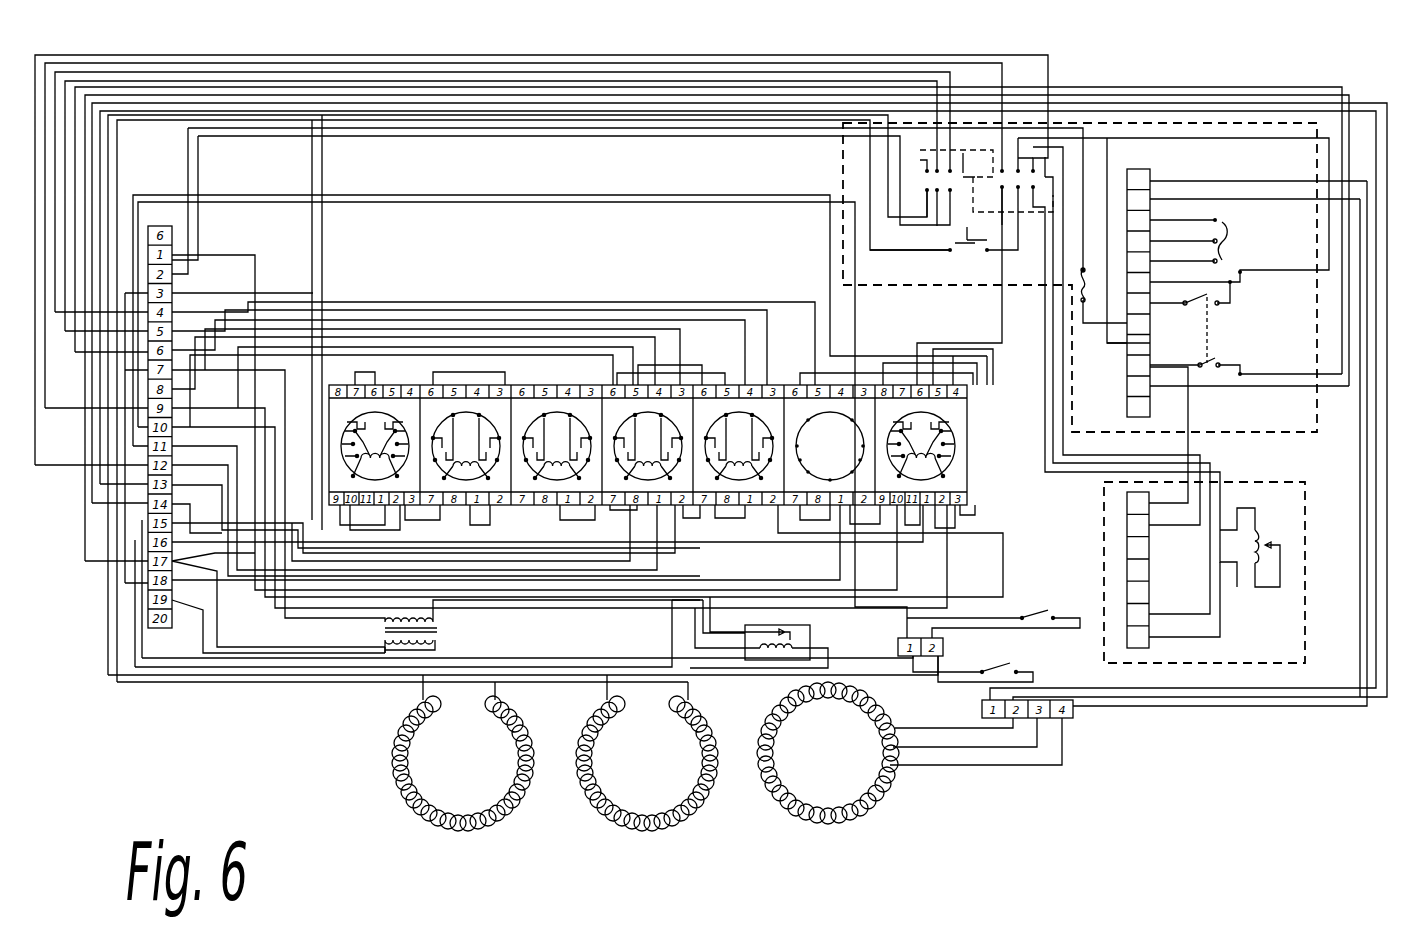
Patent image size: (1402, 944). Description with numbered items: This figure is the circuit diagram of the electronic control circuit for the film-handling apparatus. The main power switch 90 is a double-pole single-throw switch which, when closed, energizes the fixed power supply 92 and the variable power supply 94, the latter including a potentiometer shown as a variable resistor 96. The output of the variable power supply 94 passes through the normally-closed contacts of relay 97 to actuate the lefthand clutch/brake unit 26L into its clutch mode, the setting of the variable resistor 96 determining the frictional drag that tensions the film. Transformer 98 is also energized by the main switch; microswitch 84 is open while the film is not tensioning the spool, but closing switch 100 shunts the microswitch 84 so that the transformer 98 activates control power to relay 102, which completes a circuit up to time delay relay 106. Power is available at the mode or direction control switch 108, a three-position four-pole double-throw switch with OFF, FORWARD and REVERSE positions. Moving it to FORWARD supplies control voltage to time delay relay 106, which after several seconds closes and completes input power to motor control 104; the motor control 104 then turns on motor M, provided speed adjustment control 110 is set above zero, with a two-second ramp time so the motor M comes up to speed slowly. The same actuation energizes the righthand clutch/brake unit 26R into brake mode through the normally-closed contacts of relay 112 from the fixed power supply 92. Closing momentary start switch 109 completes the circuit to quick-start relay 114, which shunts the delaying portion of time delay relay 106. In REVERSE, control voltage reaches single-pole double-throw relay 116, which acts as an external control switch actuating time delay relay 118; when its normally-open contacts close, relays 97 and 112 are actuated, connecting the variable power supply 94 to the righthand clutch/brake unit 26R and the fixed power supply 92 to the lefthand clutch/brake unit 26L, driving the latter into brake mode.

The quick-start relay 114 is at (385, 430).
The relay 102 is at (468, 425).
The time delay relay 106 is at (557, 428).
The relay 97 is at (647, 433).
The relay 112 is at (730, 425).
The fixed power supply 92 is at (815, 425).
The time delay relay 118 is at (905, 428).
The mode or direction control switch 108 is at (943, 183).
The momentary start switch 109 is at (983, 227).
The speed adjustment control 110 is at (1225, 235).
The main power switch 90 is at (1208, 325).
The motor control 104 is at (1097, 432).
The variable power supply 94 is at (1103, 572).
The variable resistor 96 is at (1265, 540).
The switch 100 is at (1040, 612).
The microswitch 84 is at (1010, 673).
The transformer 98 is at (420, 648).
The single-pole double-throw relay 116 is at (812, 632).
The lefthand clutch/brake unit 26L is at (472, 797).
The righthand clutch/brake unit 26R is at (643, 795).
The motor M is at (848, 795).